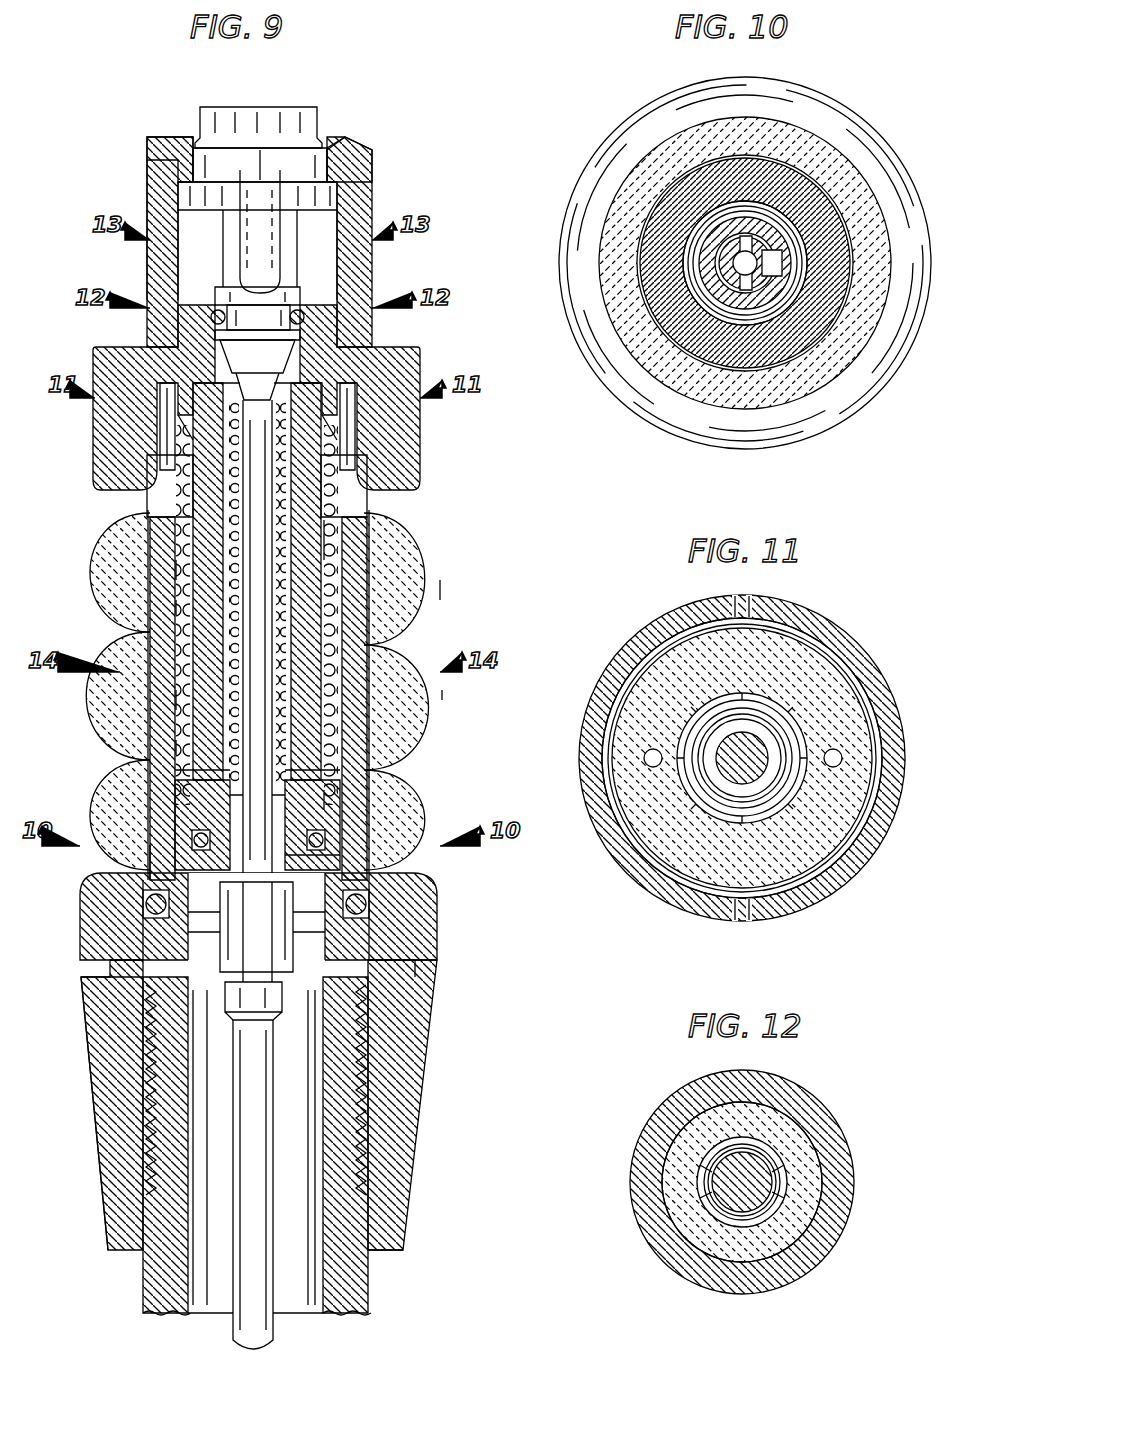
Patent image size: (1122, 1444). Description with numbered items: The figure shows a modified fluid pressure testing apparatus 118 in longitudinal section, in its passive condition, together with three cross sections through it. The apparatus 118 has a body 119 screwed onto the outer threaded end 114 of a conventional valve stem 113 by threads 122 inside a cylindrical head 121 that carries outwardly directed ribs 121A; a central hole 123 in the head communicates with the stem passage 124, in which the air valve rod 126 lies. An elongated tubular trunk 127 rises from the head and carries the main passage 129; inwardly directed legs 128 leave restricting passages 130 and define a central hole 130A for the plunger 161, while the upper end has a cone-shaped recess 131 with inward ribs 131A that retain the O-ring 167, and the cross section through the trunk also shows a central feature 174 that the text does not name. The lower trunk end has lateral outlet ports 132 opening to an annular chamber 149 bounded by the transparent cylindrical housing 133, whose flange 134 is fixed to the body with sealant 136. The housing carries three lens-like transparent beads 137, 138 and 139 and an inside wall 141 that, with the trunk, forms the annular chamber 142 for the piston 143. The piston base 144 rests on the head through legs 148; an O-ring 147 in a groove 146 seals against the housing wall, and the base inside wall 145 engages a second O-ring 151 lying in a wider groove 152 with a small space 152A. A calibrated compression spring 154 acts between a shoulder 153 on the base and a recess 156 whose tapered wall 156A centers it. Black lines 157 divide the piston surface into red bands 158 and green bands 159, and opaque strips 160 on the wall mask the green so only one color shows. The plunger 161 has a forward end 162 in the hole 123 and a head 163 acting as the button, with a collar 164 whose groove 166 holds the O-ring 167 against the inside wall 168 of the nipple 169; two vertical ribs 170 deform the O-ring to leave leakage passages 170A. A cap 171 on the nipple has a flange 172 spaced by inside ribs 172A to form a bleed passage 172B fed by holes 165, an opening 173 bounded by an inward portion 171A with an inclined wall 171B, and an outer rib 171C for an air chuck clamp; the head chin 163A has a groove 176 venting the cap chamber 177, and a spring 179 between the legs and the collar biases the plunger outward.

In FIG. 9, the valve stem 113 is at (362, 1282).
In FIG. 9, the outer threaded end 114 is at (345, 1095).
In FIG. 9, the fluid pressure testing apparatus 118 is at (455, 518).
In FIG. 9, the body 119 is at (435, 620).
In FIG. 9, the cylindrical head 121 is at (118, 1155).
In FIG. 9, the ribs or flanges 121A is at (96, 1090).
In FIG. 9, the threads 122 is at (365, 1052).
In FIG. 9, the central hole 123 is at (254, 1146).
In FIG. 9, the passage 124 is at (213, 1312).
In FIG. 9, the air valve rod 126 is at (268, 1325).
In FIG. 9, the tubular trunk 127 is at (322, 745).
In FIG. 10, the tubular trunk 127 is at (715, 290).
In FIG. 9, the legs 128 is at (175, 862).
In FIG. 10, the legs 128 is at (790, 245).
In FIG. 9, the main passage 129 is at (285, 530).
In FIG. 10, the passages 130 is at (752, 260).
In FIG. 9, the central hole 130A is at (280, 795).
In FIG. 10, the central hole 130A is at (782, 263).
In FIG. 9, the cone-shaped recess 131 is at (330, 470).
In FIG. 9, the ribs 131A is at (257, 370).
In FIG. 11, the ribs 131A is at (790, 775).
In FIG. 9, the outlet ports 132 is at (256, 932).
In FIG. 9, the cylindrical housing 133 is at (120, 640).
In FIG. 11, the cylindrical housing 133 is at (648, 820).
In FIG. 9, the annular flange 134 is at (110, 975).
In FIG. 9, the sealant 136 is at (418, 982).
In FIG. 9, the transparent bead 137 is at (130, 555).
In FIG. 9, the transparent bead 138 is at (420, 640).
In FIG. 9, the transparent bead 139 is at (148, 780).
In FIG. 10, the transparent bead 139 is at (818, 128).
In FIG. 9, the inside cylindrical wall 141 is at (390, 662).
In FIG. 9, the annular chamber 142 is at (340, 752).
In FIG. 9, the piston 143 is at (160, 720).
In FIG. 10, the piston 143 is at (705, 195).
In FIG. 9, the base portion 144 is at (390, 940).
In FIG. 9, the inside wall 145 is at (140, 820).
In FIG. 9, the annular groove 146 is at (420, 920).
In FIG. 9, the O-ring 147 is at (368, 905).
In FIG. 9, the legs 148 is at (264, 942).
In FIG. 9, the annular chamber 149 is at (160, 930).
In FIG. 9, the O-ring 151 is at (340, 810).
In FIG. 9, the annular groove 152 is at (340, 858).
In FIG. 9, the annular space 152A is at (307, 840).
In FIG. 9, the annular shoulder 153 is at (202, 824).
In FIG. 9, the compression spring 154 is at (175, 520).
In FIG. 9, the annular recess 156 is at (147, 462).
In FIG. 9, the tapered annular wall 156A is at (185, 425).
In FIG. 9, the black lines 157 is at (340, 560).
In FIG. 9, the segments or bands 158 is at (150, 575).
In FIG. 9, the segments or bands 159 is at (176, 607).
In FIG. 9, the strips or masks 160 is at (367, 485).
In FIG. 9, the plunger 161 is at (262, 640).
In FIG. 10, the plunger 161 is at (718, 240).
In FIG. 11, the plunger 161 is at (752, 740).
In FIG. 9, the forward end 162 is at (278, 1000).
In FIG. 9, the head 163 is at (262, 112).
In FIG. 9, the annular flange 163A is at (338, 196).
In FIG. 9, the annular collar 164 is at (223, 290).
In FIG. 12, the annular collar 164 is at (748, 1165).
In FIG. 9, the holes 165 is at (165, 415).
In FIG. 11, the holes 165 is at (650, 748).
In FIG. 9, the annular groove 166 is at (258, 317).
In FIG. 9, the O-ring 167 is at (304, 318).
In FIG. 12, the O-ring 167 is at (708, 1200).
In FIG. 9, the inside wall 168 is at (215, 336).
In FIG. 9, the nipple 169 is at (318, 356).
In FIG. 12, the nipple 169 is at (775, 1122).
In FIG. 9, the vertical ribs 170 is at (210, 312).
In FIG. 12, the vertical ribs 170 is at (700, 1180).
In FIG. 12, the leakage passages 170A is at (786, 1175).
In FIG. 9, the cap 171 is at (355, 262).
In FIG. 12, the cap 171 is at (800, 1100).
In FIG. 9, the inwardly directed portion 171A is at (165, 158).
In FIG. 9, the inwardly inclined wall 171B is at (338, 150).
In FIG. 9, the peripheral rib 171C is at (147, 178).
In FIG. 11, the annular flange 172 is at (600, 694).
In FIG. 11, the inside ribs 172A is at (752, 606).
In FIG. 11, the air bleed passage 172B is at (860, 720).
In FIG. 9, the center hole 173 is at (345, 158).
In FIG. 10, the center hole 174 is at (752, 272).
In FIG. 9, the longitudinal groove 176 is at (243, 172).
In FIG. 9, the chamber 177 is at (257, 255).
In FIG. 9, the compression spring 179 is at (272, 580).
In FIG. 11, the compression spring 179 is at (780, 750).